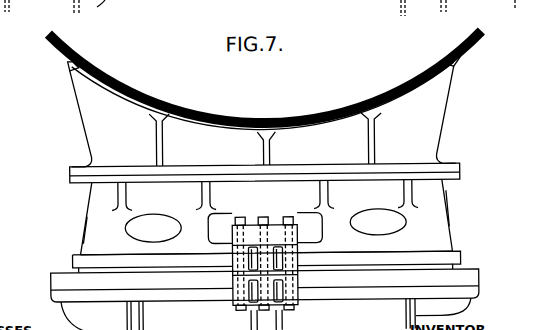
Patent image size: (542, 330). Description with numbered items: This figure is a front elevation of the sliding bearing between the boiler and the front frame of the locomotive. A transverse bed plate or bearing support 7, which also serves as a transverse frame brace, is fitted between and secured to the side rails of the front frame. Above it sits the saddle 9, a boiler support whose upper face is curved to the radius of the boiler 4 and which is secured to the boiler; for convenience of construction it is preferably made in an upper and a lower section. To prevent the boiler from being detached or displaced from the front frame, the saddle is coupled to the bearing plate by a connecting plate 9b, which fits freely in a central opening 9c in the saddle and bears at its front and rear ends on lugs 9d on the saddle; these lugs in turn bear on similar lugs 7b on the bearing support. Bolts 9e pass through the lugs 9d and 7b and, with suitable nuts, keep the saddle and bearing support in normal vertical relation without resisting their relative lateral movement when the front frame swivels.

The boiler 4 is at (64, 45).
The saddle 9 is at (254, 164).
The connecting plate 9b is at (265, 228).
The central opening 9c is at (310, 228).
The lugs on saddle 9d is at (290, 260).
The bolts 9e is at (262, 217).
The lugs on bearing support 7b is at (237, 288).
The bearing support 7 is at (222, 304).